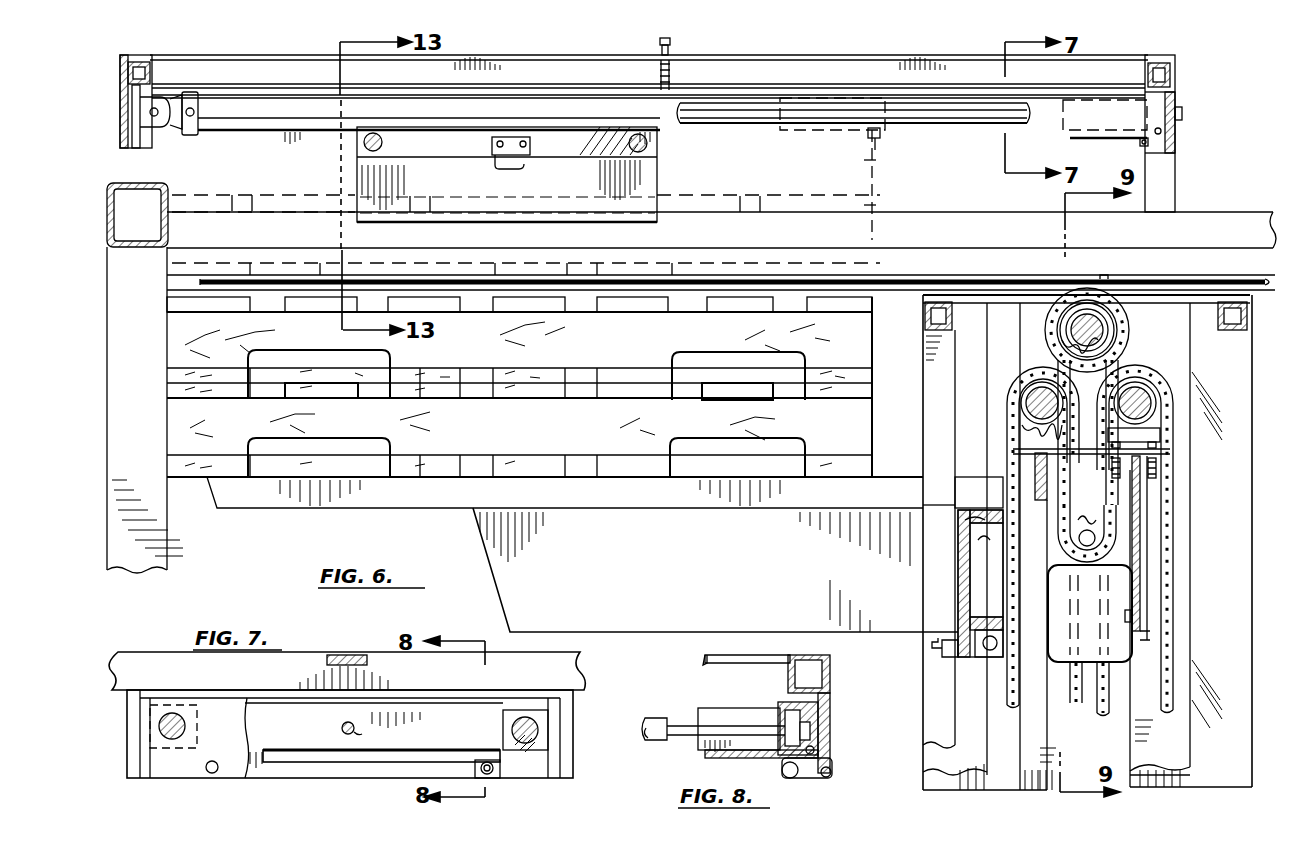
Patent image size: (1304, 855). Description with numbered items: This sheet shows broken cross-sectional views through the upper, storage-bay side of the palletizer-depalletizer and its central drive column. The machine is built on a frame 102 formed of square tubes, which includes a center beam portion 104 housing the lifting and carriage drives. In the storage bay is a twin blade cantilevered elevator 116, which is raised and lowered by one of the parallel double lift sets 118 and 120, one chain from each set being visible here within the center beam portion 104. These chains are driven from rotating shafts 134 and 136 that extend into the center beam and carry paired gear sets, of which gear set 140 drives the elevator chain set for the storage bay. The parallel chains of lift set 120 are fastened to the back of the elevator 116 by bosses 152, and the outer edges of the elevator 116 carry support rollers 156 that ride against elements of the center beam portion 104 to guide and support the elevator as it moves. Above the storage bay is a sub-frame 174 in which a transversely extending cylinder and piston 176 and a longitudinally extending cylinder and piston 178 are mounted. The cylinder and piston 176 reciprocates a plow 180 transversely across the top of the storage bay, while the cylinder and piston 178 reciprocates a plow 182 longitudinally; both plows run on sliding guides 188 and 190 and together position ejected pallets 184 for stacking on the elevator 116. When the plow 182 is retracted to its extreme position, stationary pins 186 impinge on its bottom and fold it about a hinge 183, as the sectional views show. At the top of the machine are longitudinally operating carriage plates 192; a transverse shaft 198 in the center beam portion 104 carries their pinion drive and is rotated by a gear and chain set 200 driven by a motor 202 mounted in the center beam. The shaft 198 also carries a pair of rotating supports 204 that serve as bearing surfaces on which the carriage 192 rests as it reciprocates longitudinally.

In FIG. 6, the frame 102 is at (107, 186).
In FIG. 6, the center beam portion 104 is at (923, 743).
In FIG. 6, the twin blade cantilevered elevator 116 is at (397, 507).
In FIG. 6, the double lift set 118 is at (1170, 492).
In FIG. 6, the double lift set 120 is at (1005, 666).
In FIG. 6, the rotating shaft 134 is at (1152, 406).
In FIG. 6, the rotating shaft 136 is at (1025, 402).
In FIG. 6, the paired gear set 140 is at (1027, 428).
In FIG. 6, the boss 152 is at (980, 597).
In FIG. 6, the support roller 156 is at (936, 538).
In FIG. 6, the sub-frame 174 is at (134, 54).
In FIG. 7, the sub-frame 174 is at (124, 654).
In FIG. 8, the sub-frame 174 is at (830, 670).
In FIG. 6, the transversely extending cylinder and piston 176 is at (530, 164).
In FIG. 6, the longitudinally extending cylinder and piston 178 is at (277, 125).
In FIG. 7, the longitudinally extending cylinder and piston 178 is at (374, 738).
In FIG. 6, the plow 180 is at (662, 183).
In FIG. 6, the plow 182 is at (892, 172).
In FIG. 7, the plow 182 is at (298, 776).
In FIG. 8, the plow 182 is at (708, 752).
In FIG. 6, the hinge 183 is at (890, 130).
In FIG. 8, the hinge 183 is at (818, 753).
In FIG. 6, the ejected pallet 184 is at (224, 194).
In FIG. 6, the stationary pin 186 is at (1140, 143).
In FIG. 7, the stationary pin 186 is at (218, 762).
In FIG. 8, the stationary pin 186 is at (800, 778).
In FIG. 6, the sliding guide 188 is at (354, 142).
In FIG. 6, the sliding guide 190 is at (762, 125).
In FIG. 7, the sliding guide 190 is at (158, 727).
In FIG. 8, the sliding guide 190 is at (652, 718).
In FIG. 6, the carriage plate 192 is at (897, 284).
In FIG. 6, the shaft 198 is at (1087, 318).
In FIG. 6, the gear and chain set 200 is at (1115, 344).
In FIG. 6, the motor 202 is at (1120, 596).
In FIG. 6, the rotating support 204 is at (1126, 318).